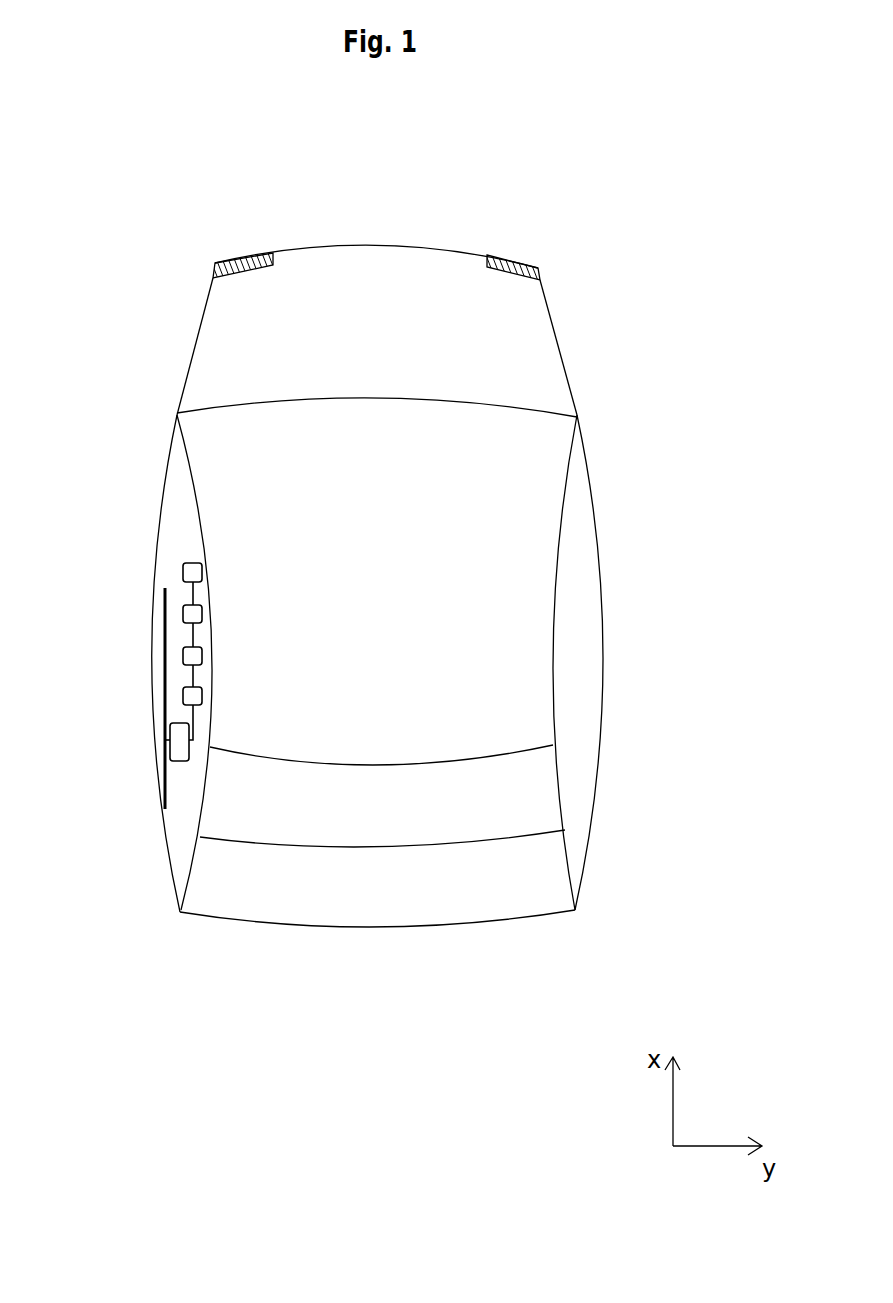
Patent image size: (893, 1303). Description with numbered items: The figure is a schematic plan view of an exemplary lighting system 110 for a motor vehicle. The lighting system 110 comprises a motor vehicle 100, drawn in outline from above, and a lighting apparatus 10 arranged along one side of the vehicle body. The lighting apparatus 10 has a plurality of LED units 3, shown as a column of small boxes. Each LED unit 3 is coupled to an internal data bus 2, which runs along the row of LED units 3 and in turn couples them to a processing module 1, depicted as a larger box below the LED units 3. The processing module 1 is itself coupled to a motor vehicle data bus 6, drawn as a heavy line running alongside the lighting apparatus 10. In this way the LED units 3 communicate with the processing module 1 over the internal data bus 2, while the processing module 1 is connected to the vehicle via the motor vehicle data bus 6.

The lighting system 110 is at (141, 127).
The motor vehicle 100 is at (619, 297).
The lighting apparatus 10 is at (94, 479).
The LED unit 3 is at (185, 572).
The internal data bus 2 is at (195, 722).
The motor vehicle data bus 6 is at (163, 687).
The processing module 1 is at (180, 753).